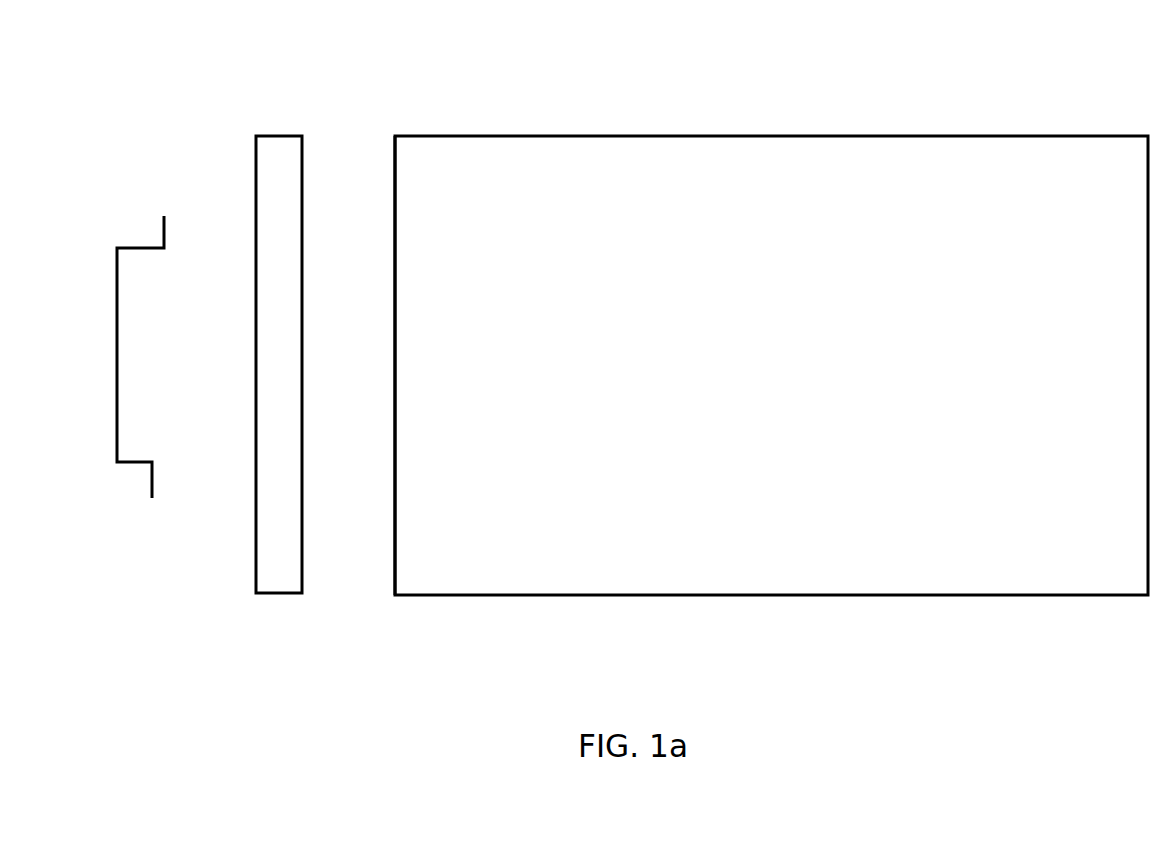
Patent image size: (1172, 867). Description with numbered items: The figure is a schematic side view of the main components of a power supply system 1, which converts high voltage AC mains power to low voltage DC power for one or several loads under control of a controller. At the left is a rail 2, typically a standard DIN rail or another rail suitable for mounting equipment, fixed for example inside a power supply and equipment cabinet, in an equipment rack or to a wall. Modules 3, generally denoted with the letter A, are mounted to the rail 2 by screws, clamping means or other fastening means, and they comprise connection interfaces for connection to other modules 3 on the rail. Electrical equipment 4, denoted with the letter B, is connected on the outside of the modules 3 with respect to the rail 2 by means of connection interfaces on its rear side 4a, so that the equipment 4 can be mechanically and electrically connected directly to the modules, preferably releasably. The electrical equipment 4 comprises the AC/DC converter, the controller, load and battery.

The power supply system 1 is at (248, 96).
The rail 2 is at (135, 465).
The modules 3 is at (280, 596).
The electrical equipment 4 is at (552, 597).
The rear side 4a is at (394, 536).